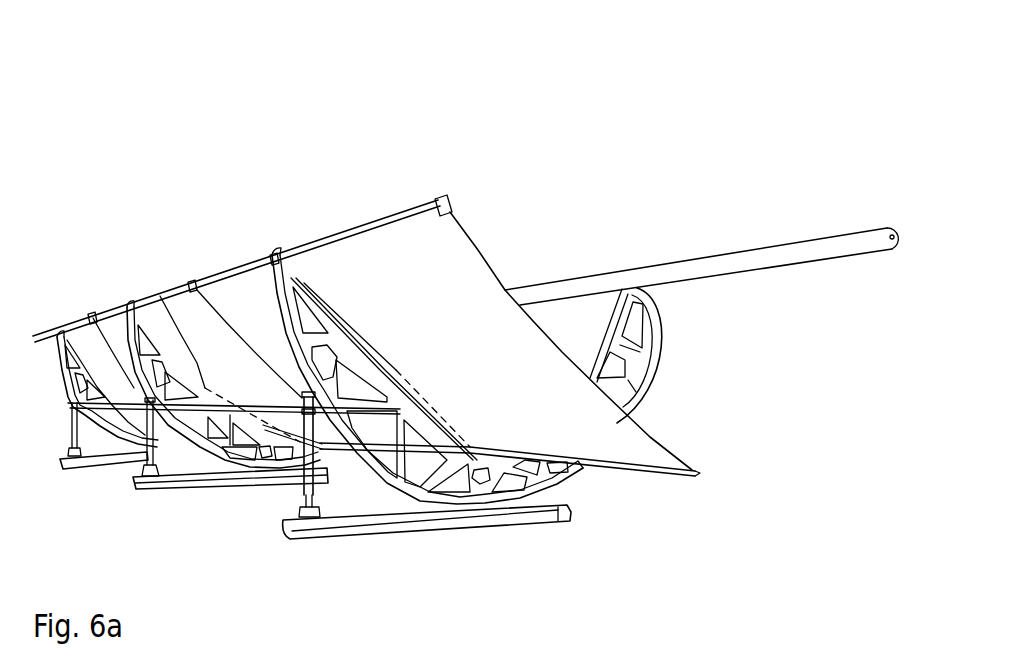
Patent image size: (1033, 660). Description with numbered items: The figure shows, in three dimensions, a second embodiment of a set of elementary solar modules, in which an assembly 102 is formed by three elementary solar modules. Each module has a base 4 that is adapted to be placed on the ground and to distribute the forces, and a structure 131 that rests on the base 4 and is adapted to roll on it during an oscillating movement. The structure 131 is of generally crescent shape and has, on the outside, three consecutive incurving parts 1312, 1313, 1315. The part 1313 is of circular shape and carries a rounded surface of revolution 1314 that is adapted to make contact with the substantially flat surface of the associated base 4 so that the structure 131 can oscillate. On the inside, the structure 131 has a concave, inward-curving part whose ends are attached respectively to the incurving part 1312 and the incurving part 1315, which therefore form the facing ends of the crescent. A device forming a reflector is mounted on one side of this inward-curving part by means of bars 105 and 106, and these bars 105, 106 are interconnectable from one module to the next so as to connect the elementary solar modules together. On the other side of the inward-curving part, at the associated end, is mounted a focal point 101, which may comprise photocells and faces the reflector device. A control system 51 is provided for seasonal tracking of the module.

The assembly 102 is at (265, 145).
The bar 105 is at (347, 230).
The focal point 101 is at (732, 268).
The incurving part 1315 is at (650, 342).
The structure 131 is at (626, 385).
The bar 106 is at (640, 467).
The incurving part 1313 is at (543, 491).
The incurving part 1312 is at (355, 451).
The rounded surface of revolution 1314 is at (420, 505).
The control system 51 is at (128, 408).
The base 4 is at (300, 533).